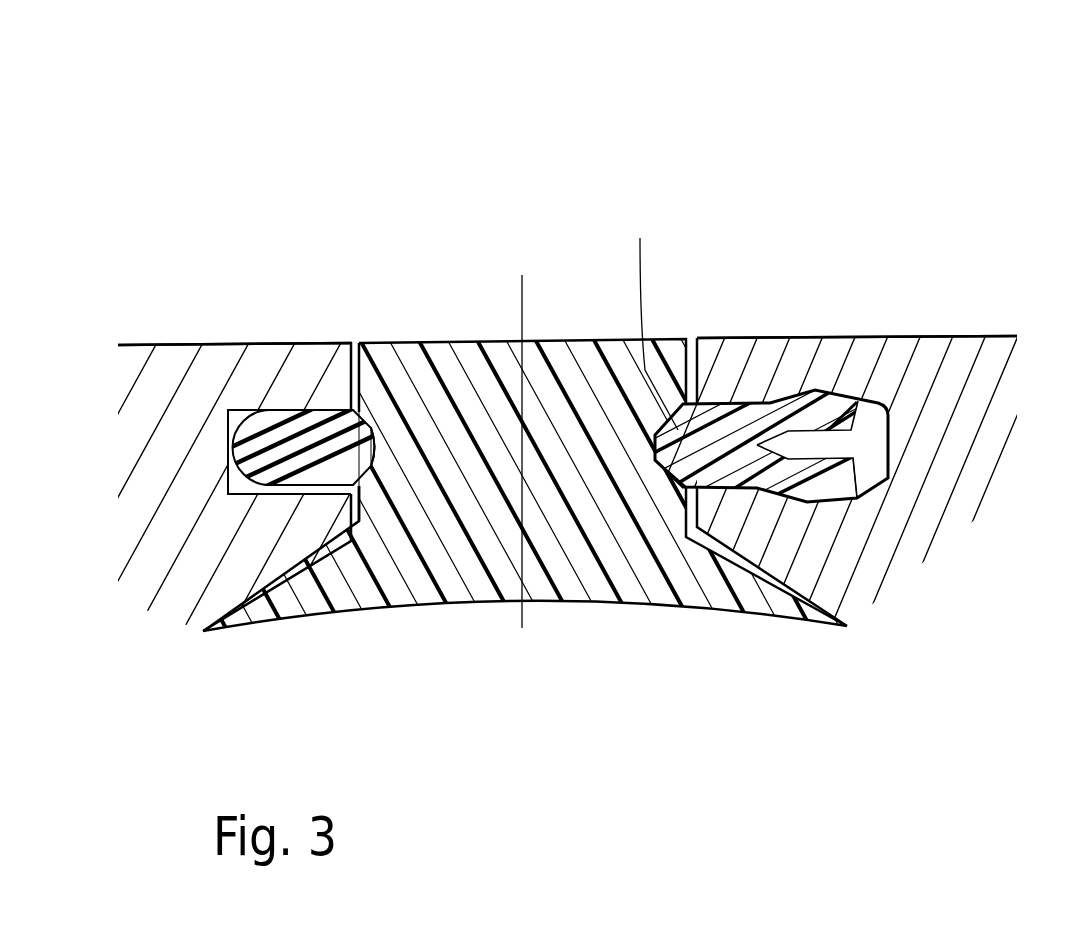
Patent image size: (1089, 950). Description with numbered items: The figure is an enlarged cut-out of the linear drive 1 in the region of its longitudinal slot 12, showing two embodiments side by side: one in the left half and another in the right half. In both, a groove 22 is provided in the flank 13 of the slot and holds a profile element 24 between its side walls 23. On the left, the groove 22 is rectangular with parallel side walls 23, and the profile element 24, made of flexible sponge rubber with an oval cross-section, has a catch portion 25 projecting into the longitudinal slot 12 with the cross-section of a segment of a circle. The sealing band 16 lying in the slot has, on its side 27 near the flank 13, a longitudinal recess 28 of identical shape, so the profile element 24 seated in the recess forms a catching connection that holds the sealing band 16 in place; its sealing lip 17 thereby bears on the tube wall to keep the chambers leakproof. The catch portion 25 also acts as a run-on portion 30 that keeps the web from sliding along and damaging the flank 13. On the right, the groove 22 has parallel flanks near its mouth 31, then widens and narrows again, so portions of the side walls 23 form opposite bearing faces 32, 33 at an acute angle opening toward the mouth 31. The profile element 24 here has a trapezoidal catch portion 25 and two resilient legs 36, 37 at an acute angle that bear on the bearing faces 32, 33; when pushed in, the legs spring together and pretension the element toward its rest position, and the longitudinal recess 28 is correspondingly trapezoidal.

The linear drive 1 is at (338, 160).
The longitudinal slot 12 is at (506, 222).
The flank 13 is at (341, 364).
The sealing band 16 is at (430, 597).
The sealing lip 17 is at (707, 574).
The groove 22 is at (228, 410).
The side walls 23 is at (293, 410).
The profile element 24 is at (230, 495).
The catch portion 25 is at (386, 418).
The side 27 is at (372, 518).
The longitudinal recess 28 is at (398, 438).
The run-on portion 30 is at (655, 447).
The mouth 31 is at (708, 396).
The bearing face 32 is at (857, 498).
The bearing face 33 is at (857, 388).
The leg 36 is at (850, 475).
The leg 37 is at (857, 420).